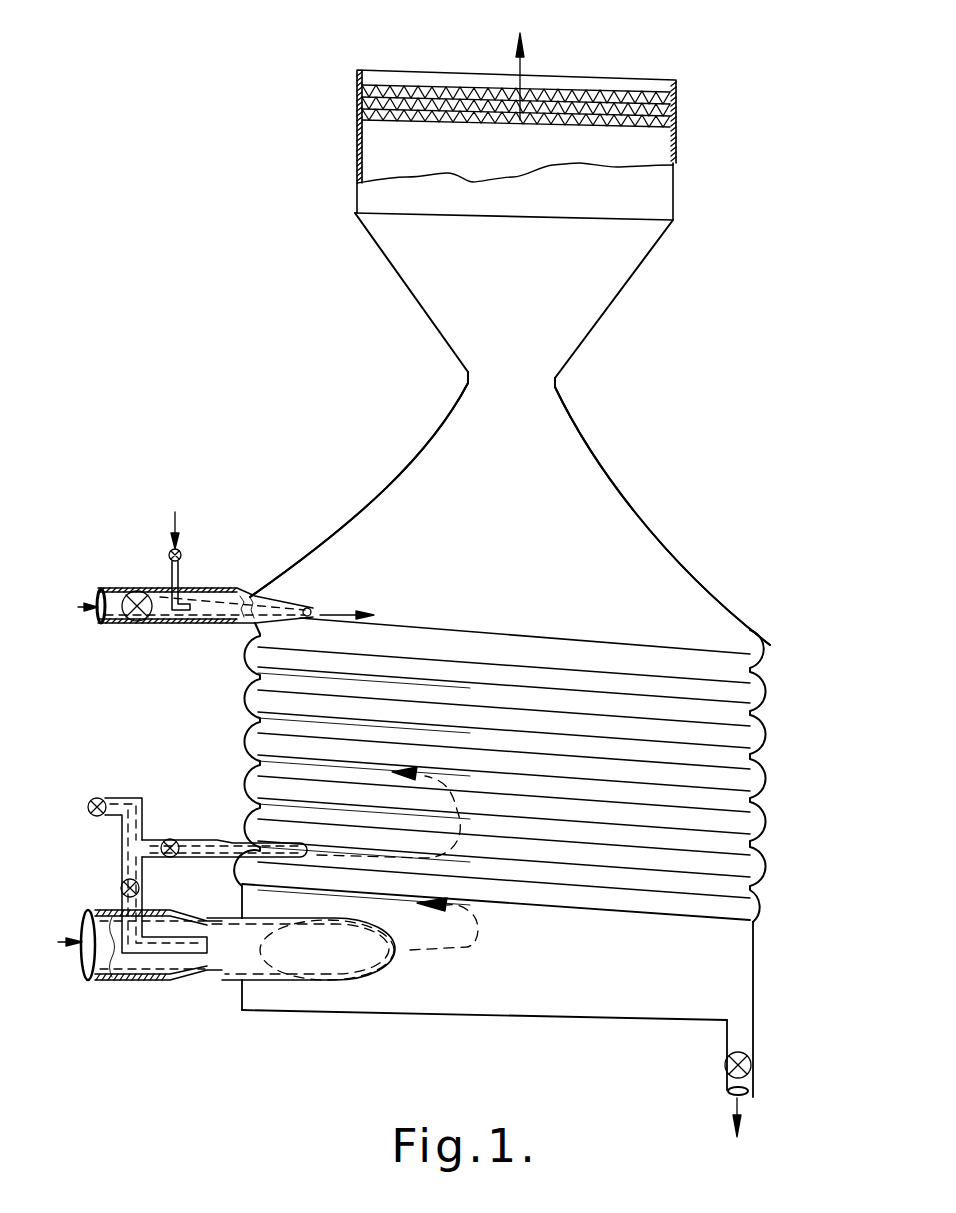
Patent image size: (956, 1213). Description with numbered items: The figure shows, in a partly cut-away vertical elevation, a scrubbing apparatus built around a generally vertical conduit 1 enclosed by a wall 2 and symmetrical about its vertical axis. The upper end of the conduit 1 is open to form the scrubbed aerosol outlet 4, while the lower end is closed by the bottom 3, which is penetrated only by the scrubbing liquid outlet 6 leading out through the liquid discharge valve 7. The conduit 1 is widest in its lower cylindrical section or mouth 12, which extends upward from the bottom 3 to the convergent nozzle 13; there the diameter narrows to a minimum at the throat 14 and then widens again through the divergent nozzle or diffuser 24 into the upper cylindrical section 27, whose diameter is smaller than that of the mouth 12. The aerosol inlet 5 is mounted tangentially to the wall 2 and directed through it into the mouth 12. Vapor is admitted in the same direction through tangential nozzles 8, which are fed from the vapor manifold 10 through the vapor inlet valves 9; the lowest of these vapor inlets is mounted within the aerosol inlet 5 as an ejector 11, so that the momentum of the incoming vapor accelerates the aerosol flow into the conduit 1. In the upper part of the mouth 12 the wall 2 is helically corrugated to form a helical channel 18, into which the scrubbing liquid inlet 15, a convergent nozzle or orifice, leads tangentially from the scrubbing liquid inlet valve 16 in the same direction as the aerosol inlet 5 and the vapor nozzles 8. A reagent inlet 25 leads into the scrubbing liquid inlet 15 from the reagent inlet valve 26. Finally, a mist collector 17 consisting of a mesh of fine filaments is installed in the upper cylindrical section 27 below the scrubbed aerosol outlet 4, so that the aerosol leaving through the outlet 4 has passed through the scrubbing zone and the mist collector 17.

The conduit 1 is at (567, 522).
The wall 2 is at (667, 548).
The bottom 3 is at (567, 1018).
The scrubbed aerosol outlet 4 is at (598, 77).
The aerosol inlet 5 is at (325, 950).
The scrubbing liquid outlet 6 is at (743, 1037).
The liquid discharge valve 7 is at (752, 1072).
The vapor inlet nozzles 8 is at (278, 850).
The vapor inlet valves 9 is at (121, 887).
The vapor manifold 10 is at (132, 803).
The ejector 11 is at (197, 960).
The mouth 12 is at (713, 967).
The convergent nozzle 13 is at (517, 458).
The throat 14 is at (512, 377).
The scrubbing liquid inlet 15 is at (308, 608).
The scrubbing liquid inlet valve 16 is at (135, 622).
The mist collector 17 is at (673, 105).
The helical channel 18 is at (753, 690).
The divergent nozzle 24 is at (590, 265).
The reagent inlet 25 is at (195, 610).
The reagent inlet valve 26 is at (172, 550).
The upper cylindrical section 27 is at (633, 185).